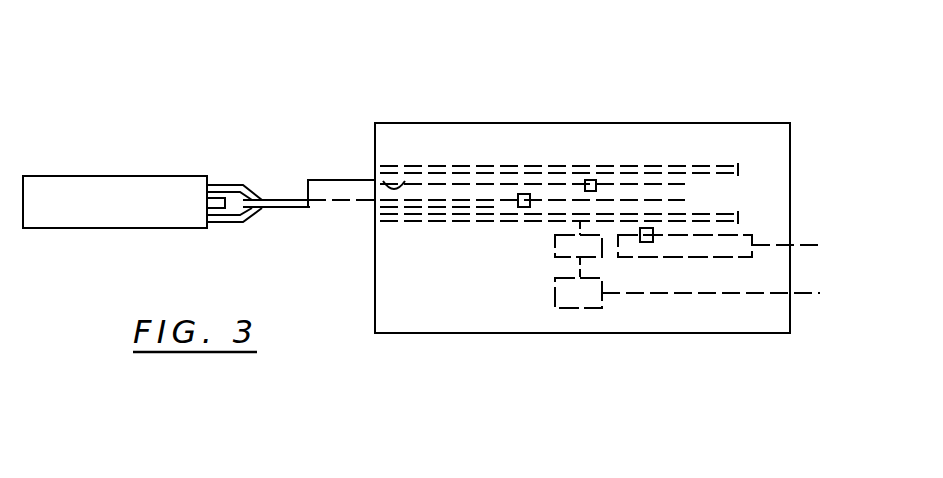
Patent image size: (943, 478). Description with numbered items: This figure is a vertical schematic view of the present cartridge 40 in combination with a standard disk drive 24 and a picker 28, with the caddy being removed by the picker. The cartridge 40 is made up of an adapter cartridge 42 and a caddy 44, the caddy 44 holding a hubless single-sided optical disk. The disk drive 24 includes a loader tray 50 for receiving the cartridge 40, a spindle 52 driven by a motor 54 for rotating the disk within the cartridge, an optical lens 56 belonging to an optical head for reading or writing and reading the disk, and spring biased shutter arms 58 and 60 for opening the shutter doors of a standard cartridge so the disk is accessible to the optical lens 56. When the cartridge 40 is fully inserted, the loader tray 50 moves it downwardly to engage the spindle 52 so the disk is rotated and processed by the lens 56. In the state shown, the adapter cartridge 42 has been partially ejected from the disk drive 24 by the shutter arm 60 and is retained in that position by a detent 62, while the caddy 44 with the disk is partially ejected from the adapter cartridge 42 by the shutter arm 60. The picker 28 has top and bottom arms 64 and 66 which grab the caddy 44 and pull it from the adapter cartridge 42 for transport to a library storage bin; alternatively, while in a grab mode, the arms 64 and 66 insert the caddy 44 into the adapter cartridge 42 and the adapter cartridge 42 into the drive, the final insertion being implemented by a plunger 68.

The disk drive 24 is at (570, 104).
The picker 28 is at (95, 166).
The cartridge 40 is at (297, 84).
The adapter cartridge 42 is at (343, 178).
The caddy 44 is at (272, 197).
The loader tray 50 is at (727, 215).
The spindle 52 is at (602, 255).
The motor 54 is at (555, 292).
The optical lens 56 is at (652, 258).
The shutter arm 58 is at (655, 183).
The shutter arm 60 is at (647, 200).
The detent 62 is at (397, 185).
The top arm 64 is at (233, 185).
The bottom arm 66 is at (233, 222).
The plunger 68 is at (218, 204).